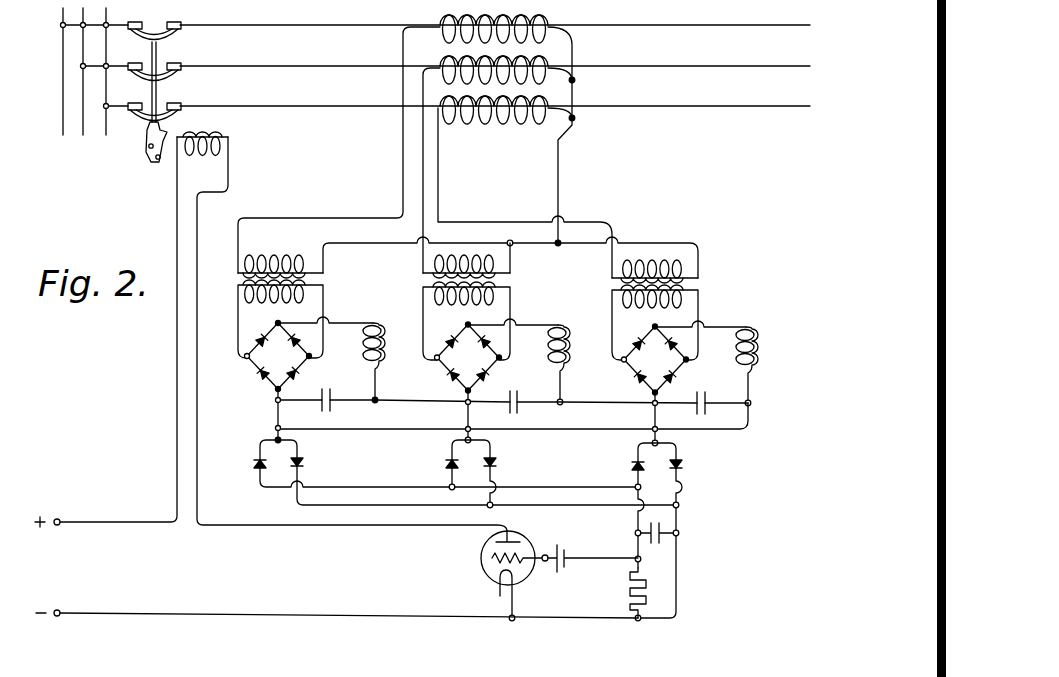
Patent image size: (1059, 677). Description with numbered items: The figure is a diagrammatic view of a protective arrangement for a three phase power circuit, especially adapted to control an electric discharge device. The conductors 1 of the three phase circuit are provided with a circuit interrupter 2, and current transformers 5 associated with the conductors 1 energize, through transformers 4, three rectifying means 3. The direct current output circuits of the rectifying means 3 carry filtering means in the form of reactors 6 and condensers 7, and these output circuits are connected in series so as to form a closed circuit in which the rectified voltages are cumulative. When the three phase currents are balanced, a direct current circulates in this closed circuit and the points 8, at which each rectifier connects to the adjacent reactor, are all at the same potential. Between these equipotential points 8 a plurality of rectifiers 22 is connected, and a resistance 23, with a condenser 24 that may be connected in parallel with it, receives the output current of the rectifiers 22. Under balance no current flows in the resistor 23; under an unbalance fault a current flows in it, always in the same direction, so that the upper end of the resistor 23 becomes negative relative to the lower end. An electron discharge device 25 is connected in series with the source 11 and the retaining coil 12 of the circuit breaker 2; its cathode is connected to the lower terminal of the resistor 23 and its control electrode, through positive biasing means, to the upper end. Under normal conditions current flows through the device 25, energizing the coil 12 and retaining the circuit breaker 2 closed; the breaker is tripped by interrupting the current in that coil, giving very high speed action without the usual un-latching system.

The conductors 1 is at (720, 27).
The circuit interrupter 2 is at (154, 82).
The rectifying means 3 is at (467, 358).
The transformers 4 is at (476, 297).
The current transformers 5 is at (548, 40).
The reactors 6 is at (526, 361).
The condensers 7 is at (336, 388).
The equipotential points 8 is at (276, 401).
The source 11 is at (336, 567).
The retaining coil 12 is at (283, 331).
The rectifiers 22 is at (303, 464).
The resistance 23 is at (650, 598).
The condenser 24 is at (666, 526).
The electron discharge device 25 is at (487, 566).